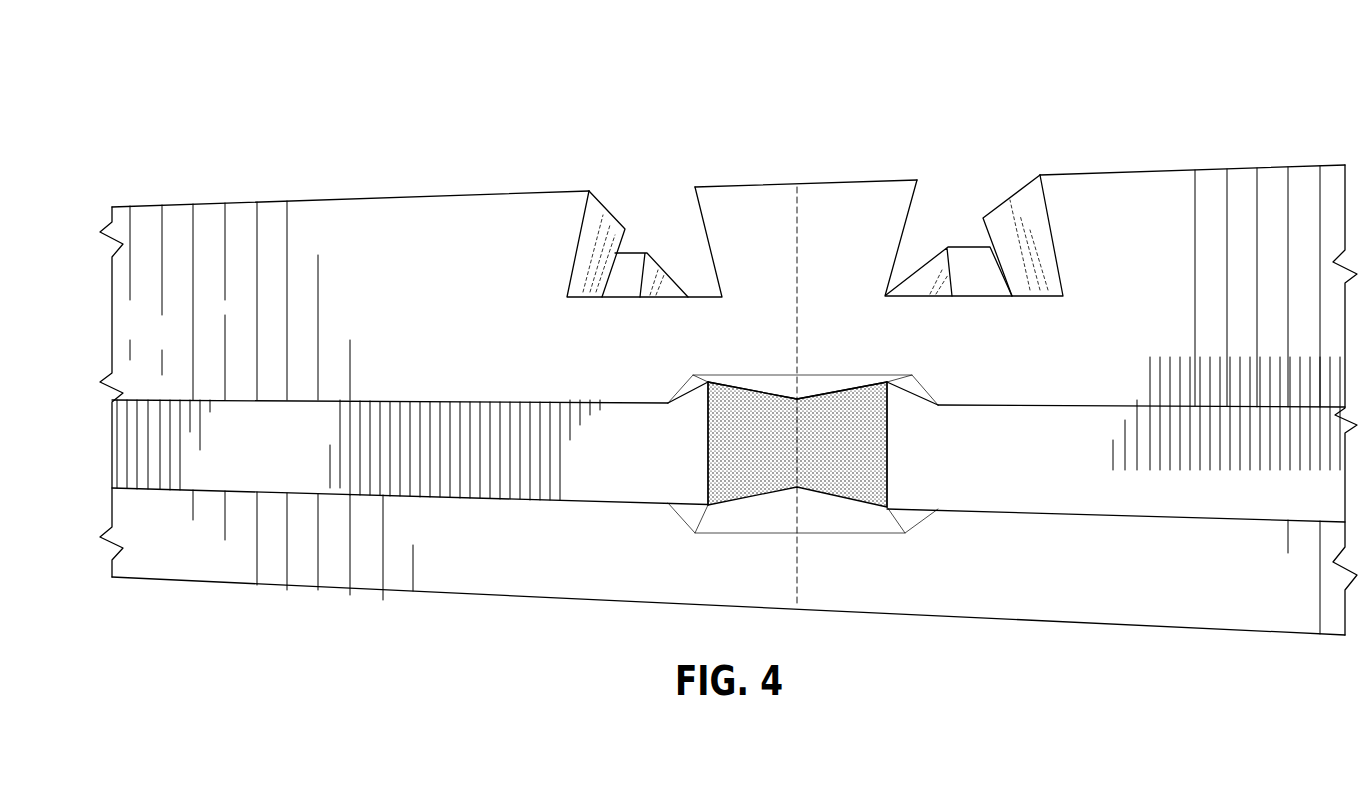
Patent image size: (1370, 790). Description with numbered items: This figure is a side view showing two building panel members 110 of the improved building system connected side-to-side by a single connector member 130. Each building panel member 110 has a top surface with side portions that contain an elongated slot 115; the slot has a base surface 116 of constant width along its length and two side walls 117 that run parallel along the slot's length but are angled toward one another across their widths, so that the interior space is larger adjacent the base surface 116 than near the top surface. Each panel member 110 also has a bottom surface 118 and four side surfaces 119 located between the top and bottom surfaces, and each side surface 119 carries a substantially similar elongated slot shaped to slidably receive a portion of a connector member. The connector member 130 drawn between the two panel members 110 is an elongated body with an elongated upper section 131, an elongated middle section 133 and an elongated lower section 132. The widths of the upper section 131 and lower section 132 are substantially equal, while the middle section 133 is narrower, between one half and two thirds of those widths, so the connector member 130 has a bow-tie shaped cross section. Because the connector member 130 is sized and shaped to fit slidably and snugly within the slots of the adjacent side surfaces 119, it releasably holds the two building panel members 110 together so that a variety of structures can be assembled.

The building panel member 110 is at (298, 127).
The elongated slot 115 is at (686, 228).
The base surface 116 is at (687, 295).
The side wall 117 is at (583, 248).
The bottom surface 118 is at (397, 592).
The side surface 119 is at (481, 437).
The connector member 130 is at (830, 494).
The elongated upper section 131 is at (890, 448).
The elongated lower section 132 is at (706, 458).
The elongated middle section 133 is at (799, 397).